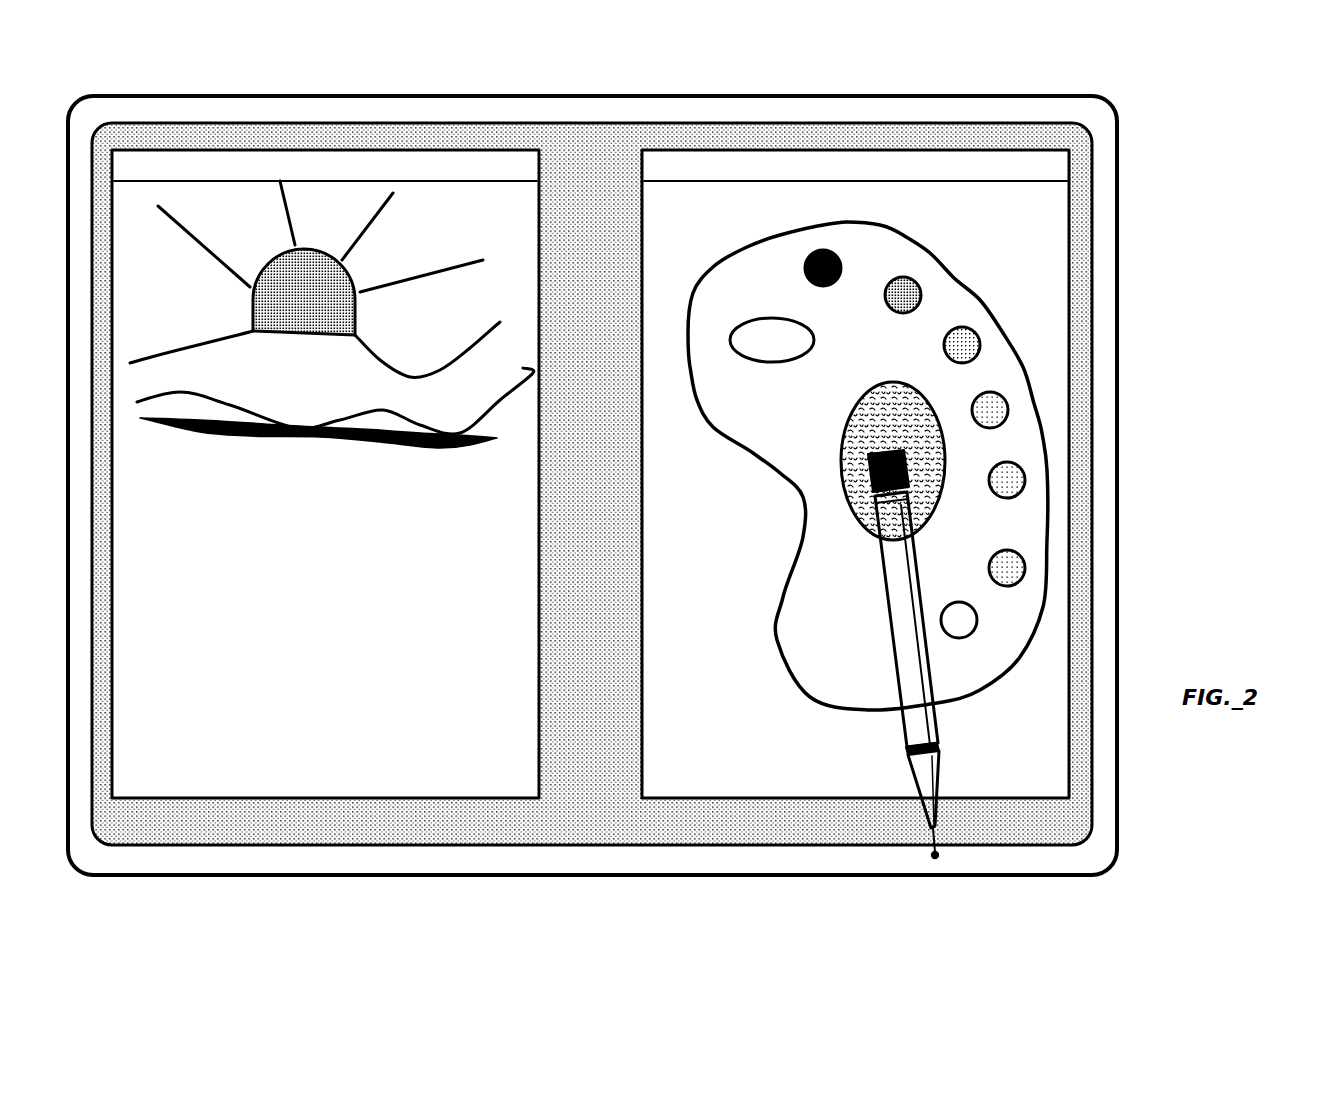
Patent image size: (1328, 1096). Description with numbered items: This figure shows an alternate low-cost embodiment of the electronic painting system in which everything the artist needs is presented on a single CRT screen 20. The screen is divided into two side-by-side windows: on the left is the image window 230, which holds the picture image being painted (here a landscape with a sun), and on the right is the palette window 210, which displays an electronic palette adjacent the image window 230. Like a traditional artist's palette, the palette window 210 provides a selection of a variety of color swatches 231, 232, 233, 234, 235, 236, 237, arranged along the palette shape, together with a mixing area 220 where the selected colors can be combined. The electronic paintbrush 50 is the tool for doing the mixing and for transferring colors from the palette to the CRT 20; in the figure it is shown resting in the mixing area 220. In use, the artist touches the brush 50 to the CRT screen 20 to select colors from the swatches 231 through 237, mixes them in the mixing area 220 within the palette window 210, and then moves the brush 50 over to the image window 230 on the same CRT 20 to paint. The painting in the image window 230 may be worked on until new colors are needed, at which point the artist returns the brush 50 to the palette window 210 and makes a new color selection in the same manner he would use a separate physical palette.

The CRT screen 20 is at (554, 884).
The electronic paintbrush 50 is at (900, 778).
The palette window 210 is at (706, 156).
The mixing area 220 is at (843, 512).
The image window 230 is at (198, 154).
The color swatch 231 is at (806, 256).
The color swatch 232 is at (892, 277).
The color swatch 233 is at (967, 330).
The color swatch 234 is at (1003, 395).
The color swatch 235 is at (1022, 468).
The color swatch 236 is at (1023, 556).
The color swatch 237 is at (973, 620).